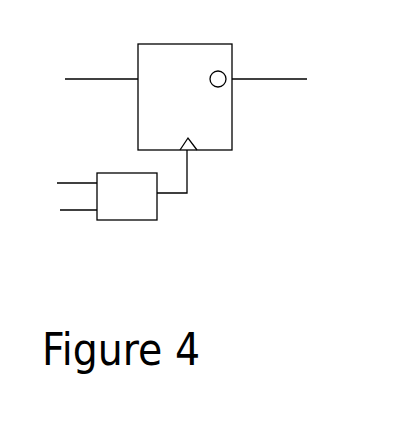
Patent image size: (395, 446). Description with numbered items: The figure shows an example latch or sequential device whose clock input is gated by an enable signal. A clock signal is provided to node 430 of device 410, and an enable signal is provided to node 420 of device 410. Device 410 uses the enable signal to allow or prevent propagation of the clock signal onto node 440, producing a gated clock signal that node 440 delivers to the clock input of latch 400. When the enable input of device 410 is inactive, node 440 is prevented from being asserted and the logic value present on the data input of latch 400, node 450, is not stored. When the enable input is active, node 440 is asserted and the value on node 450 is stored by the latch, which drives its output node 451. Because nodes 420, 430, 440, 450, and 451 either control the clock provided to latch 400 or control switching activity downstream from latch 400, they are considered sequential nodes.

The latch 400 is at (207, 112).
The device 410 is at (146, 208).
The node 420 is at (83, 174).
The node 430 is at (85, 213).
The node 440 is at (191, 183).
The node 450 is at (85, 74).
The node 451 is at (290, 70).